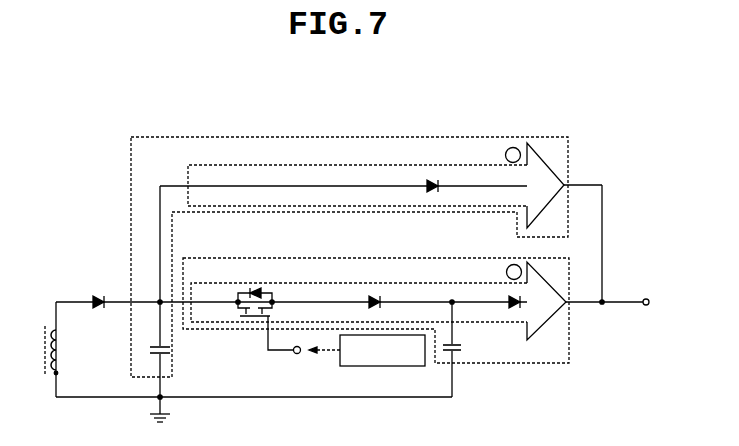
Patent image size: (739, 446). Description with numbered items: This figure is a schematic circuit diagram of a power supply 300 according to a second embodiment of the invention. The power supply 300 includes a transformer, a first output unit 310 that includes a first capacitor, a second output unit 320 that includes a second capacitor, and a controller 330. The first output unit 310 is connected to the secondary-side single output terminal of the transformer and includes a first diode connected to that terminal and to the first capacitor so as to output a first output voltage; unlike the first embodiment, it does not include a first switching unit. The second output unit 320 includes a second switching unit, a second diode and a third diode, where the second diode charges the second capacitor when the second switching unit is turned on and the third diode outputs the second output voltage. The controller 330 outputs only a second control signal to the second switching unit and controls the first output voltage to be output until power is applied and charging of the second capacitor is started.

The power supply 300 is at (72, 108).
The first output unit 310 is at (130, 225).
The second output unit 320 is at (517, 365).
The controller 330 is at (338, 358).